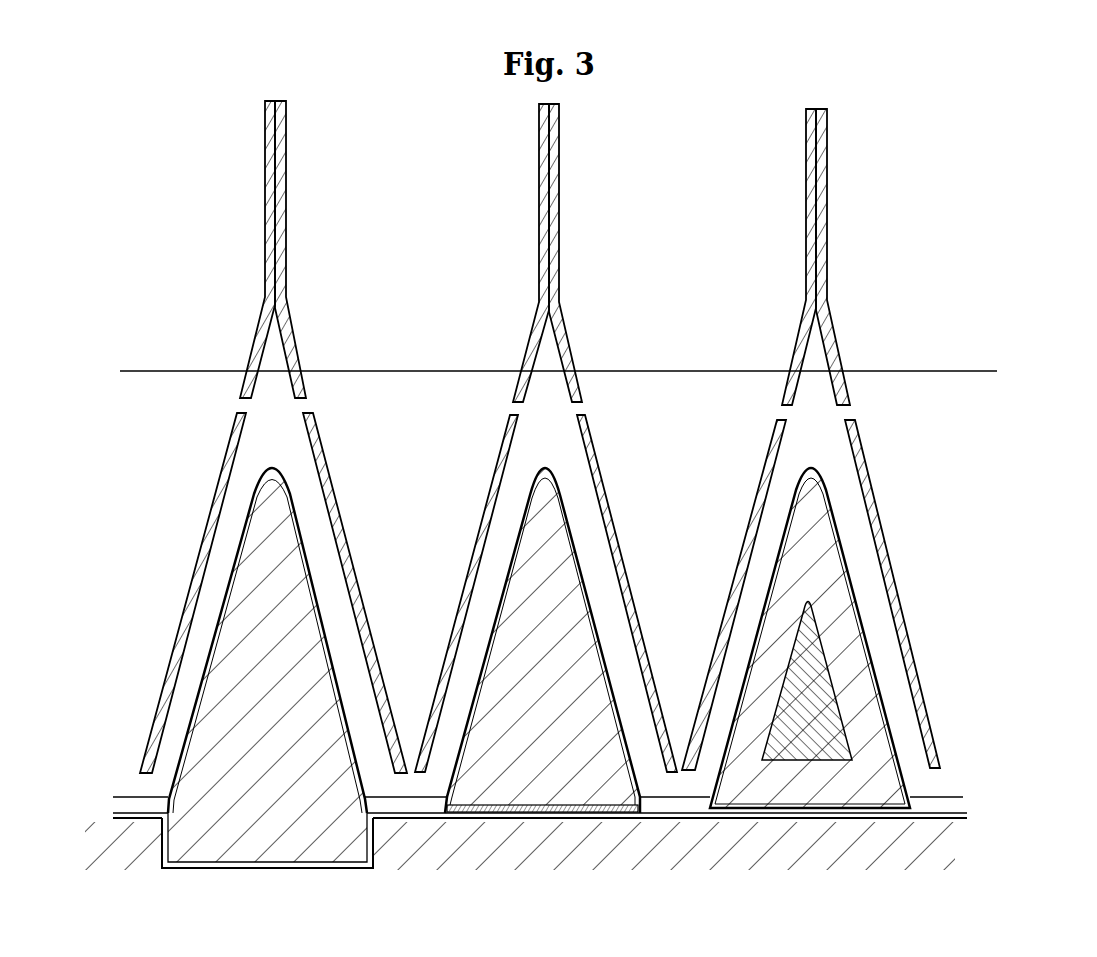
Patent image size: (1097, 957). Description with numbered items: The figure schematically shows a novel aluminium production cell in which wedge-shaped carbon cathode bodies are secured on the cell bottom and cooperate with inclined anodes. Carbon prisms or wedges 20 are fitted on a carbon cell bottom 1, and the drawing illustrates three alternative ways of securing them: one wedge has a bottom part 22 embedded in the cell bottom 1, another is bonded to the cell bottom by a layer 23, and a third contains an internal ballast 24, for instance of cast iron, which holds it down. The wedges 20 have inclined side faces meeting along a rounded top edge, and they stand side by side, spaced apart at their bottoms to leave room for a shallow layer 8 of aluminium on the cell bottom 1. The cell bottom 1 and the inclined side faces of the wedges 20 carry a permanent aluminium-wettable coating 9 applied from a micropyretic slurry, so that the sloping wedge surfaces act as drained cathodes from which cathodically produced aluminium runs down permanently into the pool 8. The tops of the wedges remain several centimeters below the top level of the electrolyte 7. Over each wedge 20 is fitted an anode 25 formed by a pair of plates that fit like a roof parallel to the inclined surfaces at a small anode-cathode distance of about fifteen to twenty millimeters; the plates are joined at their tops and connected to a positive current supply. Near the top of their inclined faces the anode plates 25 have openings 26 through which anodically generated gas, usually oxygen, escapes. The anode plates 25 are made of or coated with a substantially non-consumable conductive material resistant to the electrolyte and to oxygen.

The cell bottom 1 is at (718, 843).
The electrolyte 7 is at (682, 392).
The layer of aluminium 8 is at (126, 801).
The aluminium-wettable coating 9 is at (948, 815).
The carbon wedges 20 is at (840, 607).
The bottom parts 22 is at (333, 847).
The bonding layer 23 is at (572, 813).
The internal ballast 24 is at (833, 748).
The anodes 25 is at (872, 484).
The openings 26 is at (846, 410).